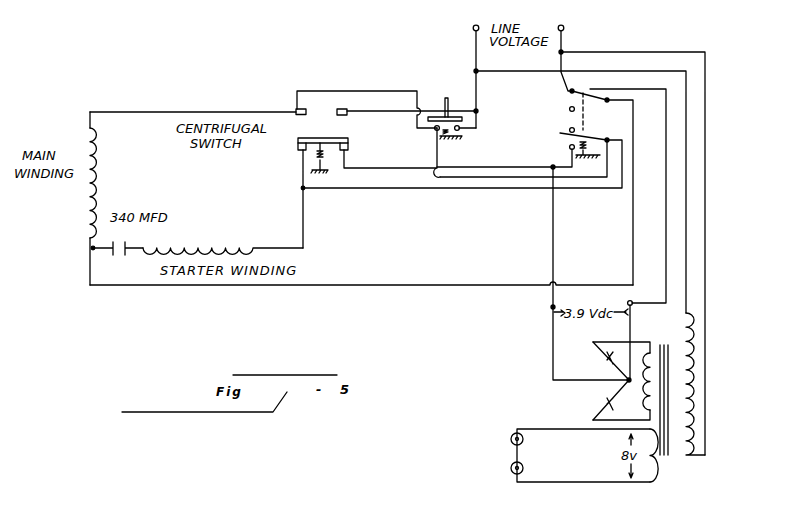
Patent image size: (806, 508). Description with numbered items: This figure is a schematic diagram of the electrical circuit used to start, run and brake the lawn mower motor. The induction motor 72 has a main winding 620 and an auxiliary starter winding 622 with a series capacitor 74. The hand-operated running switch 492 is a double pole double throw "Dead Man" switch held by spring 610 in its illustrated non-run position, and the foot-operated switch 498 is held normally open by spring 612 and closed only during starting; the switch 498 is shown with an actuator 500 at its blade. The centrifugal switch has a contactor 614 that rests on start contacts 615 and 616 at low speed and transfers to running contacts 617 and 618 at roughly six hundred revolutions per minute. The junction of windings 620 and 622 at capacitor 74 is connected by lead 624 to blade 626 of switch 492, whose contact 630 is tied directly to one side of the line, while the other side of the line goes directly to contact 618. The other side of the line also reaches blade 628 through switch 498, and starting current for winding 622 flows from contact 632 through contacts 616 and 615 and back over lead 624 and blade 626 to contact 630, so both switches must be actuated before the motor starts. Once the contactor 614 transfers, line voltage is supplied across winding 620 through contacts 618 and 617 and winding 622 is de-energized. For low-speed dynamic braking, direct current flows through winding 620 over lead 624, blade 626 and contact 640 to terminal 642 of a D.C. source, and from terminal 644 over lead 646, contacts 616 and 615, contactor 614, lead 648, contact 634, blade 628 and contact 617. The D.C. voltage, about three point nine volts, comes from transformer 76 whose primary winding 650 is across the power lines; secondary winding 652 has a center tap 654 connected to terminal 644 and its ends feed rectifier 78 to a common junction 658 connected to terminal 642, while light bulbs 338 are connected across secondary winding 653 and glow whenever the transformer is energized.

The induction motor 72 is at (76, 123).
The capacitor 74 is at (128, 248).
The transformer 76 is at (708, 378).
The rectifier 78 is at (590, 396).
The light bulbs 338 is at (510, 468).
The switch 492 is at (552, 114).
The switch 498 is at (432, 116).
The switch actuator 500 is at (448, 98).
The spring 610 is at (560, 135).
The spring 612 is at (462, 135).
The contactor 614 is at (332, 131).
The start contact 615 is at (298, 151).
The start contact 616 is at (348, 149).
The running contact 617 is at (292, 108).
The running contact 618 is at (338, 110).
The main winding 620 is at (100, 177).
The starter winding 622 is at (229, 245).
The lead 624 is at (370, 287).
The blade 626 is at (597, 90).
The blade 628 is at (588, 132).
The contact 630 is at (570, 109).
The contact 632 is at (570, 148).
The contact 634 is at (570, 131).
The contact 640 is at (575, 88).
The terminal 642 is at (632, 301).
The terminal 644 is at (551, 306).
The lead 646 is at (474, 170).
The lead 648 is at (432, 190).
The primary winding 650 is at (695, 368).
The secondary winding 652 is at (651, 348).
The secondary winding 653 is at (654, 482).
The center tap 654 is at (615, 396).
The common junction 658 is at (626, 378).